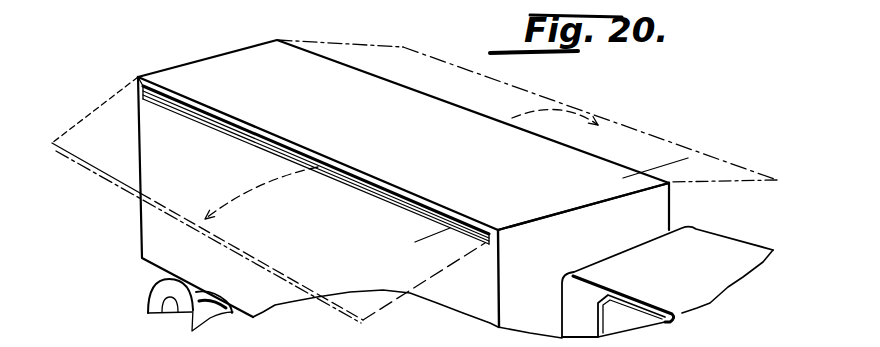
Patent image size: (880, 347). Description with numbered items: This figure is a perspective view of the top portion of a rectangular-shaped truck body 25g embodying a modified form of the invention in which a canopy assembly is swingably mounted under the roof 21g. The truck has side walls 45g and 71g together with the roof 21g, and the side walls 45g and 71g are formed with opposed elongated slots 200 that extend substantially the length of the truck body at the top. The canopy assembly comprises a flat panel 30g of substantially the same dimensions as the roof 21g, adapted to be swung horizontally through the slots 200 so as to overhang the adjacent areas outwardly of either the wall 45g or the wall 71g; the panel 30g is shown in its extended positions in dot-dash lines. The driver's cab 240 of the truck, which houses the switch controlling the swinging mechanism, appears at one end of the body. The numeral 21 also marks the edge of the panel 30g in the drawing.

The roof 21g is at (229, 76).
The flat panel 30g is at (674, 113).
The lid edge 21 is at (455, 251).
The elongated slot 200 is at (484, 248).
The truck body 25g is at (137, 242).
The side wall 71g is at (670, 208).
The driver's cab 240 is at (738, 256).
The side wall 45g is at (173, 253).